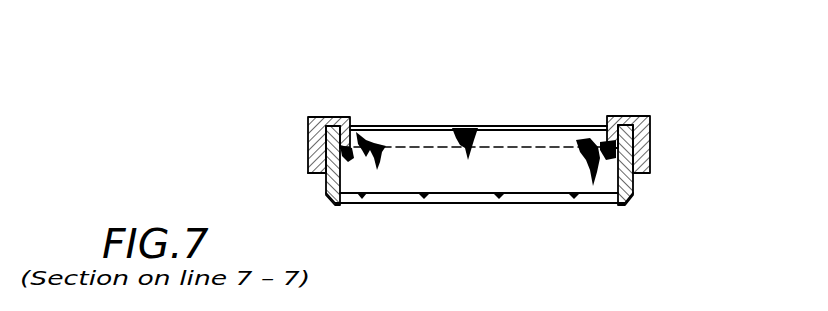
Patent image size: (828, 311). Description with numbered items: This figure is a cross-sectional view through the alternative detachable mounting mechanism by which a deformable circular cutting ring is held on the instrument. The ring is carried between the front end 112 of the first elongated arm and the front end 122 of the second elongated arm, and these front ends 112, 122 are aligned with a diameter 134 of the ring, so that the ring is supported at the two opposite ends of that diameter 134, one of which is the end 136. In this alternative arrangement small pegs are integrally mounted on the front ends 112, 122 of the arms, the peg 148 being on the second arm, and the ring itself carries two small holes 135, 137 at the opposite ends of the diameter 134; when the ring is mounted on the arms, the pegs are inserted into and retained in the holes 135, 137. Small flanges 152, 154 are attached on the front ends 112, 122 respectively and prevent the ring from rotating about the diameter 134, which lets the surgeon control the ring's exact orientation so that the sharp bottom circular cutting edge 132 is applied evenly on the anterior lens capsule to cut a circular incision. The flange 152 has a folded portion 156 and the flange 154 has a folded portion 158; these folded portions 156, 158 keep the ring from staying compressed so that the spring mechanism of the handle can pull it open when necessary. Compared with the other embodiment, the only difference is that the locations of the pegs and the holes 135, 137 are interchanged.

The front end of the first elongated arm 112 is at (310, 174).
The front end of the second elongated arm 122 is at (652, 237).
The sharp bottom circular cutting edge 132 is at (471, 0).
The diameter 134 is at (487, 148).
The small hole 135 is at (336, 147).
The opposite end of the diameter 136 is at (316, 11).
The small hole 137 is at (650, 147).
The small peg 148 is at (582, 151).
The small flange 152 is at (332, 117).
The small flange 154 is at (633, 116).
The folded portion 156 is at (387, 148).
The folded portion 158 is at (568, 143).